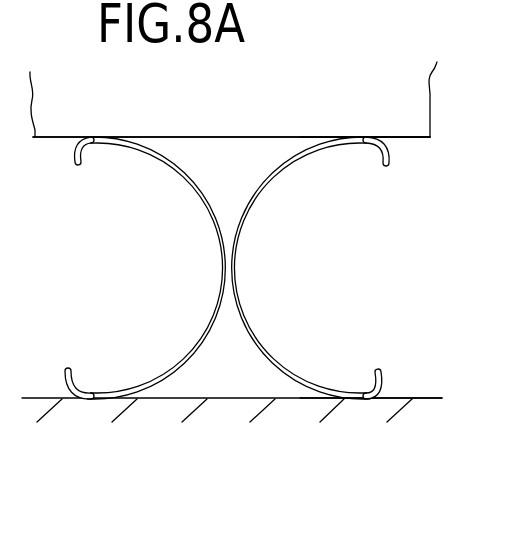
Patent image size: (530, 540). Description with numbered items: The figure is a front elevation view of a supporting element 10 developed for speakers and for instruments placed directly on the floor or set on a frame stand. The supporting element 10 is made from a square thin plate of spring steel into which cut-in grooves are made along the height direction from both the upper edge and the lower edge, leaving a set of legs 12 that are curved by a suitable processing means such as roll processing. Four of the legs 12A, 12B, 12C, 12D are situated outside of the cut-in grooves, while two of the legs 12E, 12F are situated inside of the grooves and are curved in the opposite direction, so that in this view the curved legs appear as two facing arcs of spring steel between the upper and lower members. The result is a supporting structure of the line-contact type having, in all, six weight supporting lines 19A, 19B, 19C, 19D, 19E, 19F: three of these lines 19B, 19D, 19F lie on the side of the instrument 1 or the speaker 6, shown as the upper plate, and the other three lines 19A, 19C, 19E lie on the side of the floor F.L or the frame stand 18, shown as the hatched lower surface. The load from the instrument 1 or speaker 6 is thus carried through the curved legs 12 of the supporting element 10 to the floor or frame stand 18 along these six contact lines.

The instrument 1 is at (277, 99).
The speaker 6 is at (413, 97).
The supporting element 10 is at (298, 318).
The spring steel plate legs 12 is at (243, 268).
The leg 12A is at (370, 358).
The leg 12B is at (388, 182).
The leg 12C is at (389, 358).
The leg 12D is at (375, 159).
The leg 12E is at (110, 388).
The leg 12F is at (85, 157).
The frame stand 18 is at (357, 219).
The weight supporting line 19A is at (232, 438).
The weight supporting line 19B is at (116, 97).
The weight supporting line 19C is at (85, 399).
The weight supporting line 19D is at (100, 137).
The weight supporting line 19E is at (355, 399).
The weight supporting line 19F is at (372, 137).